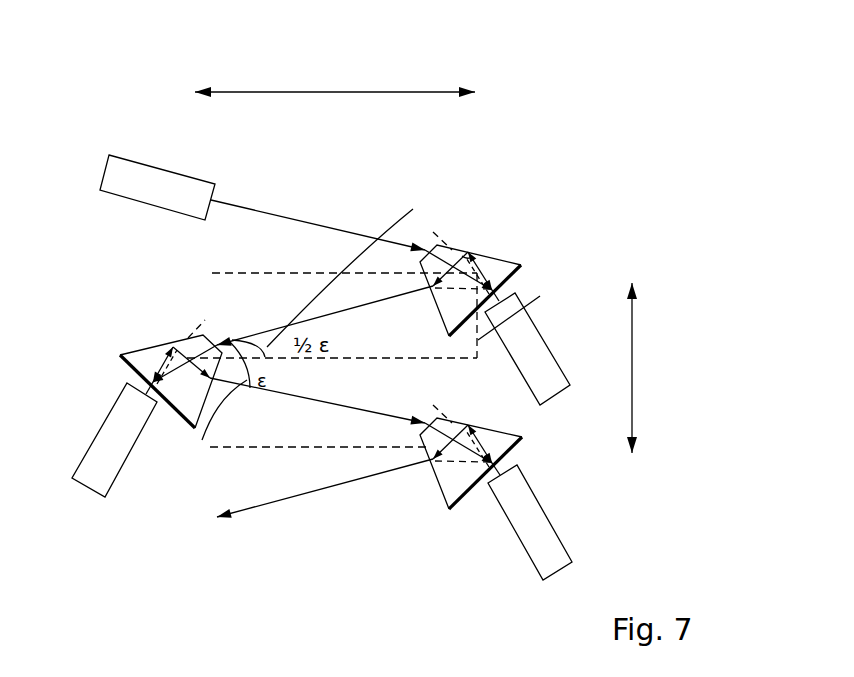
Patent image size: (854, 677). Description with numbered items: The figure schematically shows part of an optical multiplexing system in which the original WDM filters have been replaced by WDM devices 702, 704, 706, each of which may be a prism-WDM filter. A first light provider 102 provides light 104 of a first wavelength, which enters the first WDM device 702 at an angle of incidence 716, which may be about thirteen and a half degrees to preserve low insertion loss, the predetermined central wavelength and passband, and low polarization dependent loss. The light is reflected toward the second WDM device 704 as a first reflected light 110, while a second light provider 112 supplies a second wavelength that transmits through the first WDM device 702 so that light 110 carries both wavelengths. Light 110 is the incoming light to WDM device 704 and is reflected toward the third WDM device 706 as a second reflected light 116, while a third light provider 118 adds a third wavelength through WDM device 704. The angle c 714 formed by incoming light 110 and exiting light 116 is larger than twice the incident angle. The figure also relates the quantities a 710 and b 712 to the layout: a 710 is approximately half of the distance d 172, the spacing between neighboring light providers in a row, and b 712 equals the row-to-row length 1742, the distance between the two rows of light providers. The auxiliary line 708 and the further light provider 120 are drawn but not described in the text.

The length L2 1742 is at (340, 90).
The first light provider 102 is at (157, 168).
The light 104 is at (303, 222).
The reference line 708 is at (349, 263).
The angle of incidence AOI 716 is at (468, 250).
The WDM device 702 is at (500, 258).
The a 710 is at (540, 296).
The second light provider 112 is at (552, 355).
The distance d 172 is at (632, 400).
The WDM device 704 is at (155, 347).
The first reflected light 110 is at (272, 330).
The b 712 is at (355, 358).
The third light provider 118 is at (110, 412).
The second reflected light 116 is at (372, 412).
The WDM device 706 is at (462, 420).
The third detector 120 is at (548, 518).
The angle c 714 is at (232, 382).